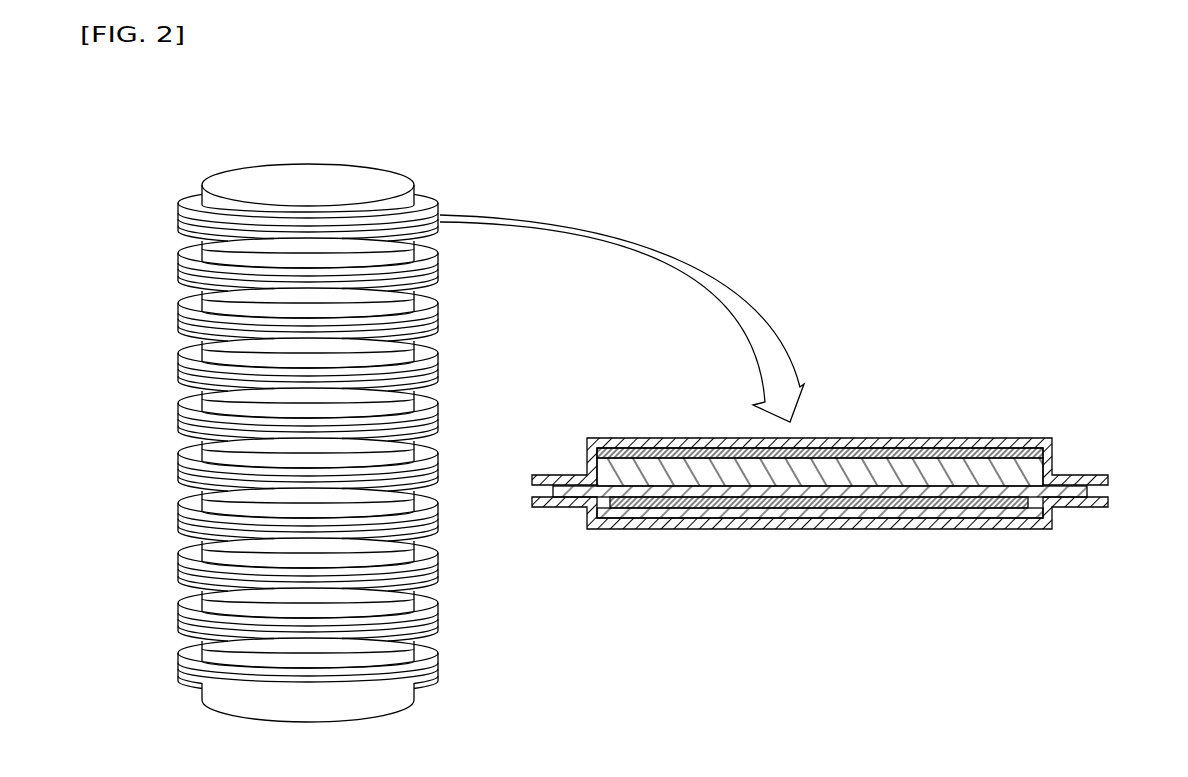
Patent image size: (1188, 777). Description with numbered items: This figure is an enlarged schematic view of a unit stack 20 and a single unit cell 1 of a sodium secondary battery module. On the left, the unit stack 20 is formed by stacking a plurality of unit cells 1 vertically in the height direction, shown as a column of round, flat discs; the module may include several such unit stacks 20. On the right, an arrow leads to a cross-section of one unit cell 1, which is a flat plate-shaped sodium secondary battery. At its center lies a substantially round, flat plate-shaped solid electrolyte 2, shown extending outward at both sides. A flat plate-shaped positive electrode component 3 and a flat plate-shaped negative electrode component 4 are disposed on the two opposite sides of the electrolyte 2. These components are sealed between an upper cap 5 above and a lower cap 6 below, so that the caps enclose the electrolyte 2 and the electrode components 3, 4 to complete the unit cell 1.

The unit stack 20 is at (178, 179).
The unit cell 1 is at (620, 410).
The solid electrolyte 2 is at (1110, 490).
The positive electrode component 3 is at (1018, 441).
The negative electrode component 4 is at (973, 503).
The upper cap 5 is at (975, 440).
The lower cap 6 is at (898, 522).